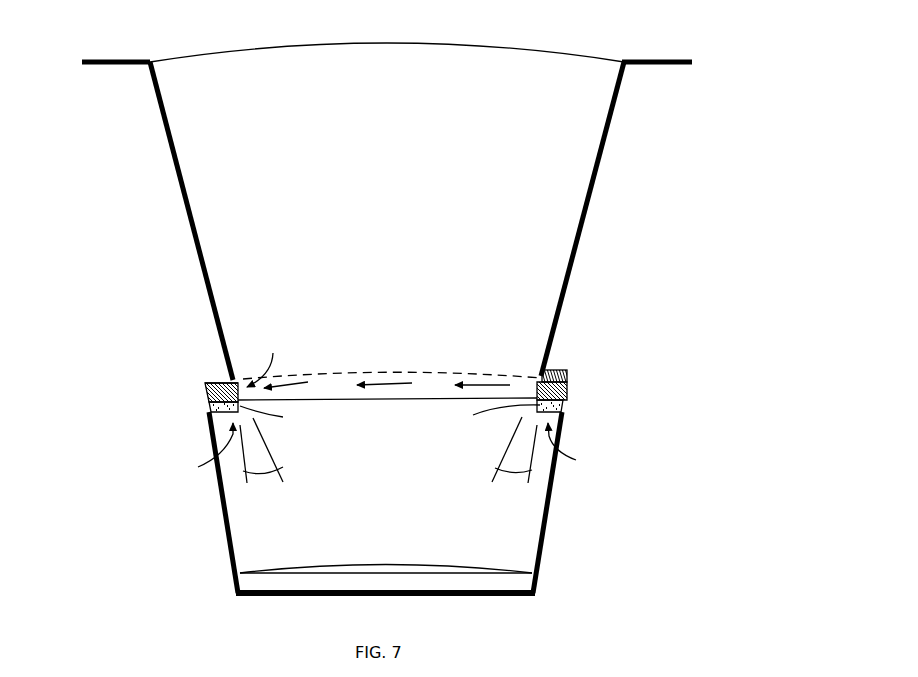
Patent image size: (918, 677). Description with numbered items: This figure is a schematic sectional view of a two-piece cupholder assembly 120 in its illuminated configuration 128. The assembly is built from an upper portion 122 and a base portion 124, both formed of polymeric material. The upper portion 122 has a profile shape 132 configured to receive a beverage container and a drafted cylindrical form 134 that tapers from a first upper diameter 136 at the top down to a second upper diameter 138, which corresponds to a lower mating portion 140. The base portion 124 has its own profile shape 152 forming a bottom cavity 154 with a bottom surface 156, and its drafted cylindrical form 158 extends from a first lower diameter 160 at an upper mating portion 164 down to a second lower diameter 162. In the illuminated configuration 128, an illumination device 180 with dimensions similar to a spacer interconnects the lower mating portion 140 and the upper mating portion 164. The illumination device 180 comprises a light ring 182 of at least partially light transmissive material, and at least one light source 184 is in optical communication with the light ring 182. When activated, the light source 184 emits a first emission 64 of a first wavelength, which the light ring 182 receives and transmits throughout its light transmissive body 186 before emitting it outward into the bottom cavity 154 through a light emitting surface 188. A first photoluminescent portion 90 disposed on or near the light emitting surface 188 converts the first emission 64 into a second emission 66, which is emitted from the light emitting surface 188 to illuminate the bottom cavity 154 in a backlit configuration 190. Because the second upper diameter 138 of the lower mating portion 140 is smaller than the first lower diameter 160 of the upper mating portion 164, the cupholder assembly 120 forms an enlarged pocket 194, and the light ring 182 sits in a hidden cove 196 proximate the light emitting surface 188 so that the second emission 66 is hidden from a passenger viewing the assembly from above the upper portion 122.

The first upper diameter 136 is at (242, 50).
The cupholder assembly 120 is at (387, 31).
The illuminated configuration 128 is at (387, 31).
The profile shape 132 is at (134, 221).
The drafted cylindrical form 134 is at (165, 165).
The upper portion 122 is at (594, 190).
The base portion 124 is at (543, 530).
The profile shape 152 is at (169, 502).
The drafted cylindrical form 158 is at (216, 531).
The bottom surface 156 is at (397, 570).
The second lower diameter 162 is at (343, 565).
The enlarged pocket 194 is at (380, 468).
The bottom cavity 154 is at (380, 502).
The second upper diameter 138 is at (333, 400).
The first photoluminescent portion 90 is at (390, 418).
The first lower diameter 160 is at (367, 372).
The first emission 64 is at (308, 382).
The lower mating portion 140 is at (270, 361).
The light ring 182 is at (212, 382).
The light transmissive body 186 is at (206, 393).
The light source 184 is at (568, 377).
The light emitting surface 188 is at (213, 409).
The hidden cove 196 is at (196, 450).
The upper mating portion 164 is at (578, 446).
The second emission 66 is at (280, 443).
The illumination device 180 is at (601, 365).
The backlit configuration 190 is at (568, 361).